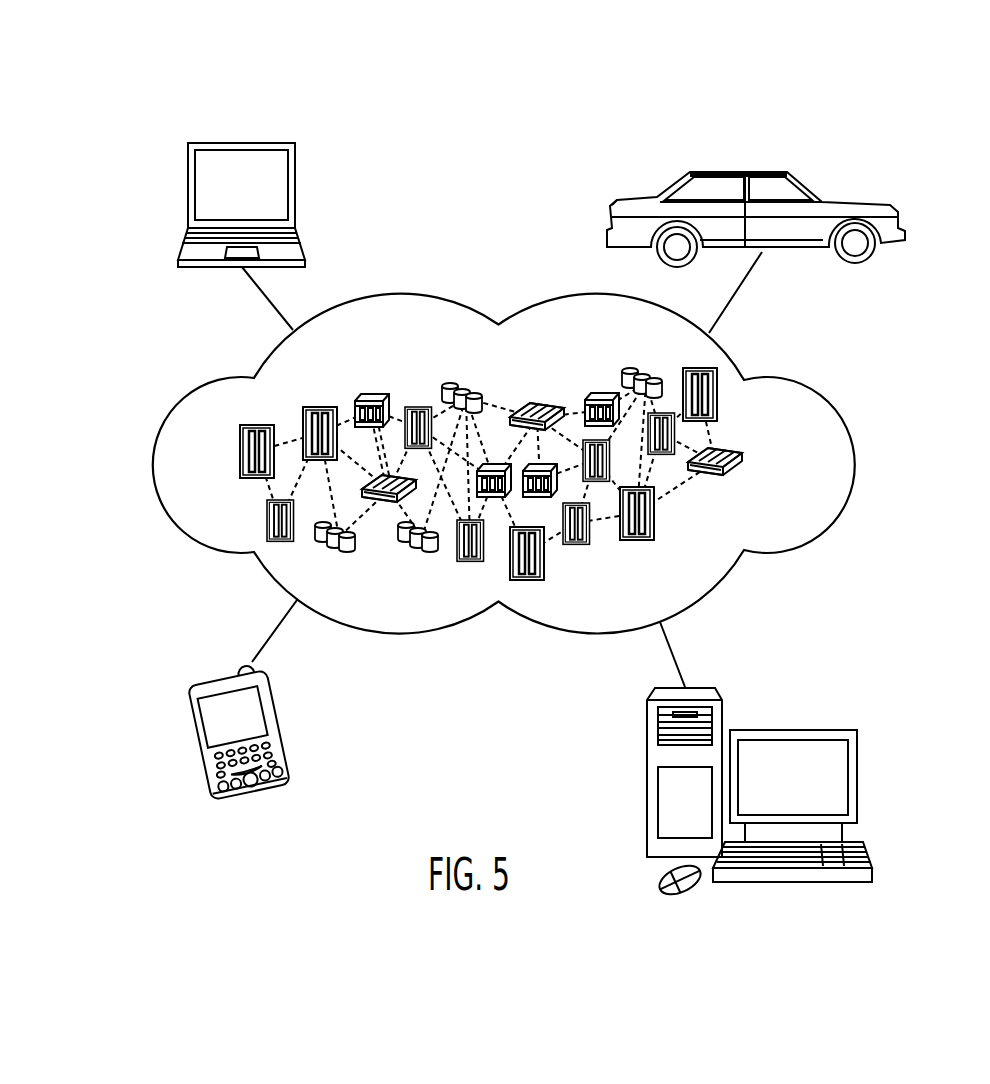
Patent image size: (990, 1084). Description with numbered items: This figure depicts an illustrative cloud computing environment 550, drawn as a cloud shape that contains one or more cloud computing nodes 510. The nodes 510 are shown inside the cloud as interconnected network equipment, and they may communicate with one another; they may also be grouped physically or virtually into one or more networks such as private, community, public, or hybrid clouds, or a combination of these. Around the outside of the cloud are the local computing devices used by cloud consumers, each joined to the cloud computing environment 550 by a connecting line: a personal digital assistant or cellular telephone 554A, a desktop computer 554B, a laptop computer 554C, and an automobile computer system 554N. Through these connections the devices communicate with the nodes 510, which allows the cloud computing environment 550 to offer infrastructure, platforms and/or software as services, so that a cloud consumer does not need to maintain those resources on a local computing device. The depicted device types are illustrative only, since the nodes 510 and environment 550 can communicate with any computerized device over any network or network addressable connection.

The cloud computing node 510 is at (754, 463).
The cloud computing environment 550 is at (805, 384).
The personal digital assistant (PDA) or cellular telephone 554A is at (222, 675).
The desktop computer 554B is at (793, 730).
The laptop computer 554C is at (242, 143).
The automobile computer system 554N is at (735, 172).